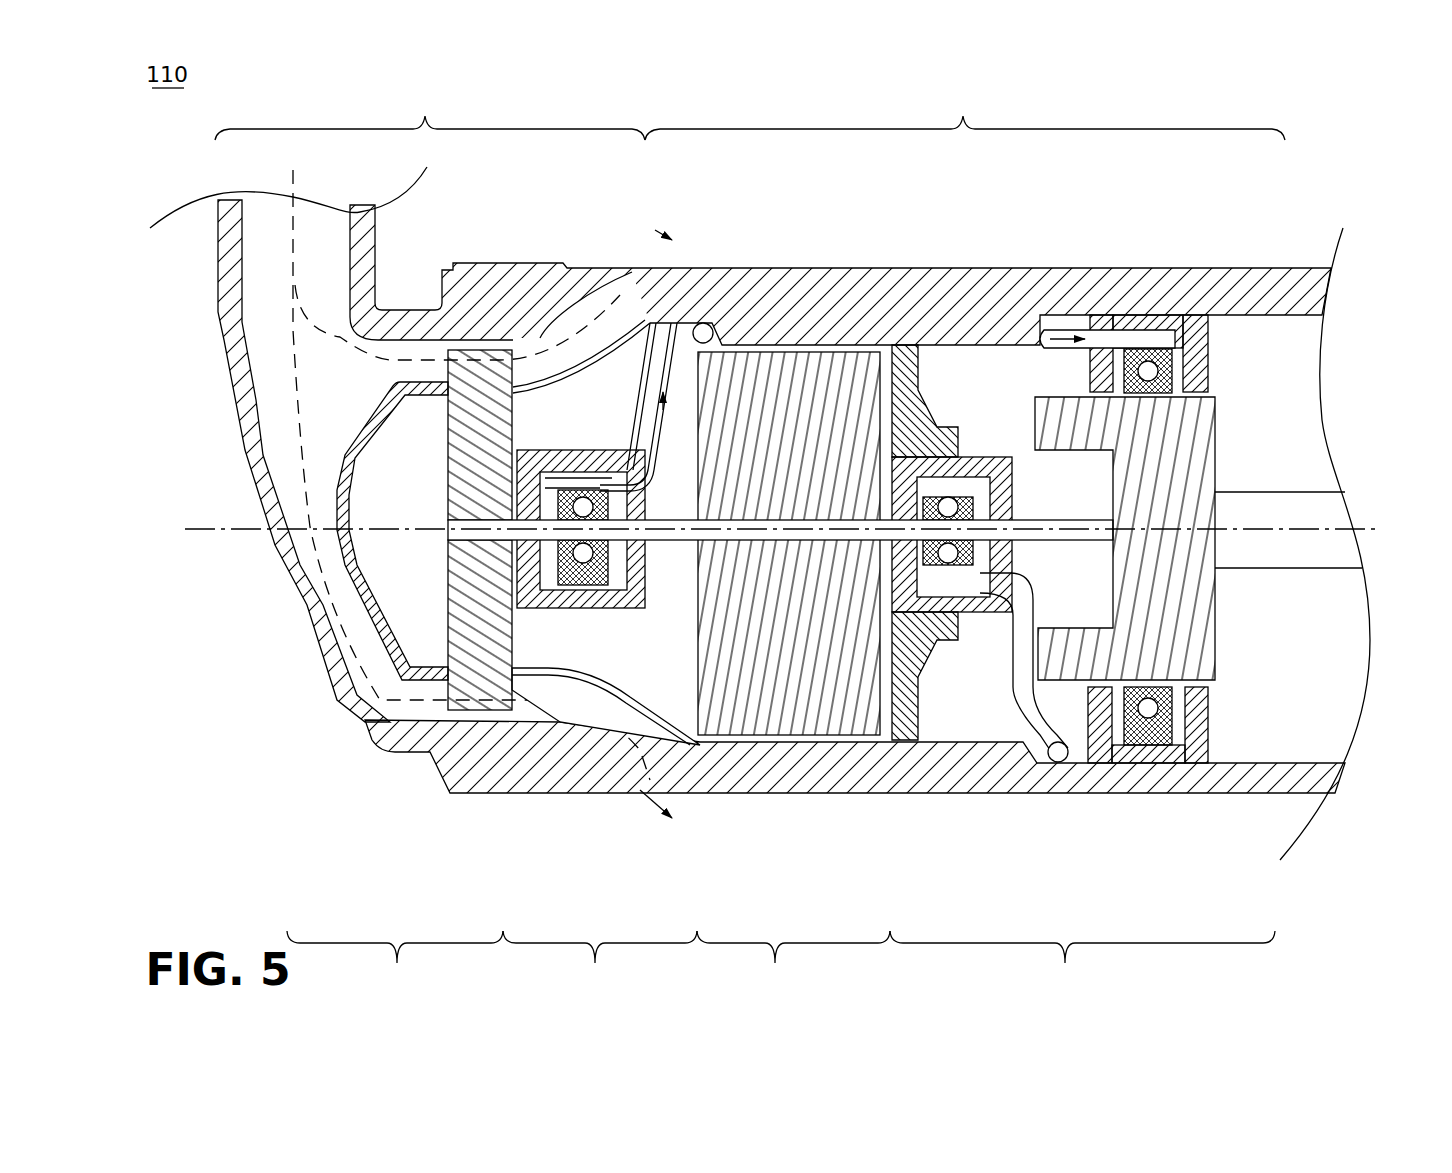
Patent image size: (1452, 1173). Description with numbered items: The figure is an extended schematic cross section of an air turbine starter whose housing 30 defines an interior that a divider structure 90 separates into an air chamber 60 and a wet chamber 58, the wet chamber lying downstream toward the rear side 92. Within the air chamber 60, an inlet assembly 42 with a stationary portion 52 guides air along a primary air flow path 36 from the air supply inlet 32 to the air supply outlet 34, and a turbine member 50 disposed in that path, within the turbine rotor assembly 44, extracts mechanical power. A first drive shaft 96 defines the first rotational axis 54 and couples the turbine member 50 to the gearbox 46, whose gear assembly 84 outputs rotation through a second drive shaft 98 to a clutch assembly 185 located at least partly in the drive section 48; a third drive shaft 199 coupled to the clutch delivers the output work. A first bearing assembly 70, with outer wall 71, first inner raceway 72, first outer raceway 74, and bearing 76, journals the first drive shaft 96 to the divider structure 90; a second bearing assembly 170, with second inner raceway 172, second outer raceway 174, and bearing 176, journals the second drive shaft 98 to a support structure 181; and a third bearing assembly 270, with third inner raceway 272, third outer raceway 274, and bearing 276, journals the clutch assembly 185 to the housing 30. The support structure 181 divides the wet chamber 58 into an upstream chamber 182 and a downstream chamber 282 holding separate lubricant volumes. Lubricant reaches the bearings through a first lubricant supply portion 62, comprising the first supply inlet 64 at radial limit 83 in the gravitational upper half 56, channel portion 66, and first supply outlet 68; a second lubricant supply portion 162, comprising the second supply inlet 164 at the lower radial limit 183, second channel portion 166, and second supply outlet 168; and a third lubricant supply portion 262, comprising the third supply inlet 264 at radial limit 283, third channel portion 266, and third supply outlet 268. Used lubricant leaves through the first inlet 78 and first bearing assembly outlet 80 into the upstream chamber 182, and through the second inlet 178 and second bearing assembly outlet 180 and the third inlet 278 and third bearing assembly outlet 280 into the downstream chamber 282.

The housing 30 is at (510, 258).
The air supply inlet 32 is at (255, 186).
The air supply outlet 34 is at (618, 795).
The primary air flow path 36 is at (217, 315).
The inlet assembly 42 is at (395, 960).
The turbine rotor assembly 44 is at (600, 960).
The gearbox 46 is at (793, 960).
The drive section 48 is at (1082, 960).
The turbine member 50 is at (460, 723).
The stationary portion 52 is at (465, 705).
The first rotational axis 54 is at (237, 529).
The gravitational upper half 56 is at (525, 497).
The wet chamber 58 is at (965, 114).
The air chamber 60 is at (430, 114).
The first lubricant supply portion 62 is at (680, 423).
The first supply inlet 64 is at (686, 392).
The channel portion 66 is at (636, 392).
The first supply outlet 68 is at (557, 487).
The first bearing assembly 70 is at (527, 445).
The outer wall 71 is at (475, 712).
The first inner raceway 72 is at (535, 592).
The first outer raceway 74 is at (560, 584).
The bearing 76 is at (585, 565).
The first inlet 78 is at (598, 560).
The first bearing assembly outlet 80 is at (618, 635).
The radial limit 83 is at (680, 320).
The gear assembly 84 is at (777, 737).
The divider structure 90 is at (700, 795).
The rear side 92 is at (1343, 350).
The first drive shaft 96 is at (447, 538).
The second drive shaft 98 is at (1053, 518).
The second lubricant supply portion 162 is at (1010, 645).
The second supply inlet 164 is at (1058, 764).
The second channel portion 166 is at (1023, 665).
The second supply outlet 168 is at (878, 735).
The second bearing assembly 170 is at (897, 447).
The second inner raceway 172 is at (920, 455).
The second outer raceway 174 is at (948, 493).
The bearing 176 is at (935, 642).
The second inlet 178 is at (968, 495).
The second bearing assembly outlet 180 is at (995, 470).
The support structure 181 is at (895, 745).
The upstream chamber 182 is at (640, 598).
The radial limit 183 is at (1032, 762).
The clutch assembly 185 is at (1218, 632).
The third drive shaft 199 is at (1250, 490).
The third lubricant supply portion 262 is at (1072, 322).
The third supply inlet 264 is at (1050, 325).
The third channel portion 266 is at (1060, 330).
The third supply outlet 268 is at (1190, 340).
The third bearing assembly 270 is at (1225, 360).
The third inner raceway 272 is at (1195, 745).
The third outer raceway 274 is at (1133, 350).
The bearing 276 is at (1155, 355).
The third inlet 278 is at (1096, 735).
The third bearing assembly outlet 280 is at (1130, 710).
The downstream chamber 282 is at (1062, 589).
The radial limit 283 is at (1030, 345).